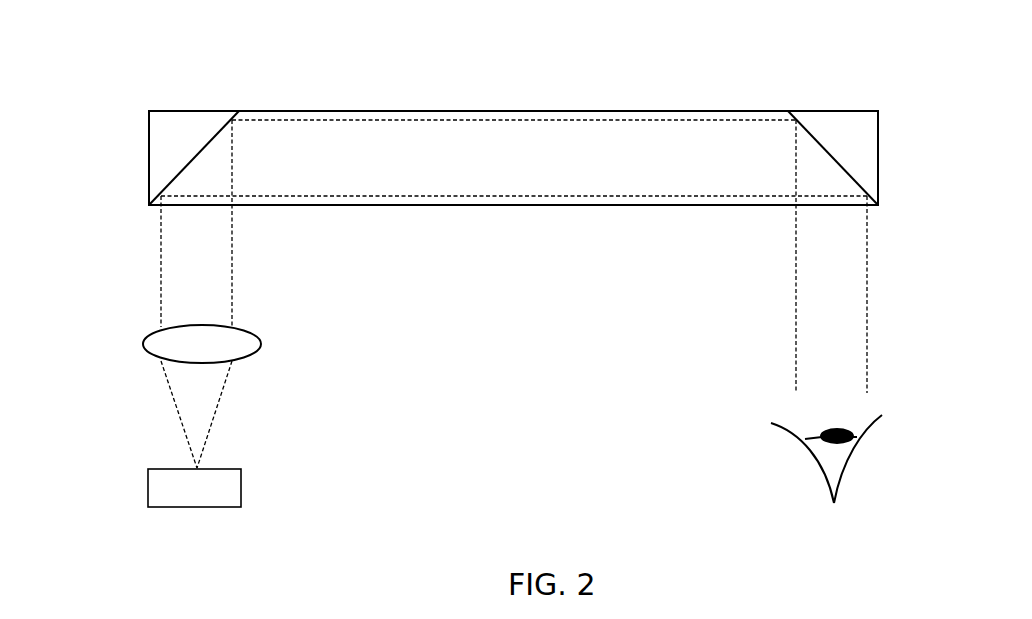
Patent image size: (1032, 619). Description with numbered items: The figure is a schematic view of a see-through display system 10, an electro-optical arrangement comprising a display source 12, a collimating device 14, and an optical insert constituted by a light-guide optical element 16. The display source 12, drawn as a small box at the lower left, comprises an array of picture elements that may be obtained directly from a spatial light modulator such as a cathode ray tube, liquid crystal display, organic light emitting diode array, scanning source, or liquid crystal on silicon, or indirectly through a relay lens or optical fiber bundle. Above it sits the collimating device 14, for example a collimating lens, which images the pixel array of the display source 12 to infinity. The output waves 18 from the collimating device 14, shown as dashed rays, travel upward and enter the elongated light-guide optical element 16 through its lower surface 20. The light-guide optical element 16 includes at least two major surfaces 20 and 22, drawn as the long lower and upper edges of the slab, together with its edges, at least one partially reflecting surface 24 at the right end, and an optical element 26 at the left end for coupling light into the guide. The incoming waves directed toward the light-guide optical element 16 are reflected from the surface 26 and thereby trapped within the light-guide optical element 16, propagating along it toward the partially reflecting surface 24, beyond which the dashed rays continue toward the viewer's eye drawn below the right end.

The see-through display system 10 is at (143, 99).
The display source 12 is at (241, 495).
The collimating device 14 is at (258, 335).
The light-guide optical element 16 is at (620, 97).
The output waves 18 is at (161, 254).
The lower surface 20 is at (498, 206).
The major surface 22 is at (329, 111).
The partially reflecting surface 24 is at (820, 145).
The optical element for coupling light 26 is at (200, 150).